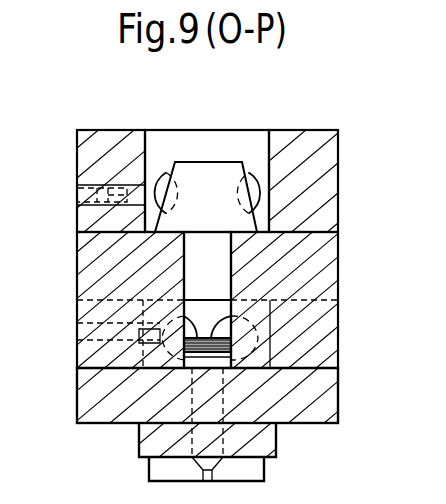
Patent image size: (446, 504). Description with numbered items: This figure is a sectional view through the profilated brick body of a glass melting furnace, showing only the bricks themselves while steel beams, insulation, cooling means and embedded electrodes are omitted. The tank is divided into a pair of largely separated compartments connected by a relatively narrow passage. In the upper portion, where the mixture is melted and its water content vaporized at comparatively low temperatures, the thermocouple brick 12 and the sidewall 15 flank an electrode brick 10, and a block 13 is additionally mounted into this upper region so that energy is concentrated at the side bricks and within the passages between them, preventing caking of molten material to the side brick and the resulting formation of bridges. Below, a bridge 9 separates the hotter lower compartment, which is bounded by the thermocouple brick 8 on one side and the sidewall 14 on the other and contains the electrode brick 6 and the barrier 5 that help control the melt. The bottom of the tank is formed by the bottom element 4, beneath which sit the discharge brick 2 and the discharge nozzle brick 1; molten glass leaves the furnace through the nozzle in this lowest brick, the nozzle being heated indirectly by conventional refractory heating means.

The discharge nozzle brick 1 is at (258, 472).
The discharge brick 2 is at (272, 442).
The bottom element 4 is at (323, 397).
The barrier 5 is at (192, 364).
The electrode brick 6 is at (196, 304).
The thermocouple brick 8 is at (86, 258).
The bridge 9 is at (222, 280).
The electrode brick 10 is at (247, 155).
The thermocouple brick 12 is at (117, 135).
The block 13 is at (206, 176).
The sidewall 14 is at (322, 277).
The sidewall 15 is at (313, 138).